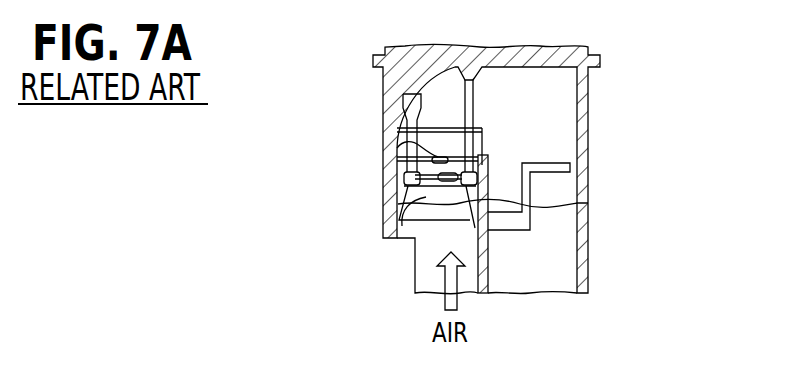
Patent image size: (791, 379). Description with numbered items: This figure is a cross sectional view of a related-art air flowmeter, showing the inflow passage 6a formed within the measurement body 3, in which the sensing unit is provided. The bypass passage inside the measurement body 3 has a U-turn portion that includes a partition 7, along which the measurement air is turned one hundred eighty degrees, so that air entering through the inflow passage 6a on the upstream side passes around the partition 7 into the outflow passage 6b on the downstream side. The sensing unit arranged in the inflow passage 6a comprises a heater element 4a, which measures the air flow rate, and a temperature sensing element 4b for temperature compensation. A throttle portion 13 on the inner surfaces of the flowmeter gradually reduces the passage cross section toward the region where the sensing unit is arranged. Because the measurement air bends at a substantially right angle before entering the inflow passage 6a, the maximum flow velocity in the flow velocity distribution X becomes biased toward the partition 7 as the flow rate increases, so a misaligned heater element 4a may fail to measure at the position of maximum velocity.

The measurement body 3 is at (588, 106).
The heater element 4a is at (397, 150).
The temperature sensing element 4b is at (424, 179).
The throttle portion 13 is at (413, 240).
The inflow passage 6a is at (424, 247).
The outflow passage 6b is at (573, 258).
The partition 7 is at (488, 270).
The flow velocity distribution X is at (588, 203).